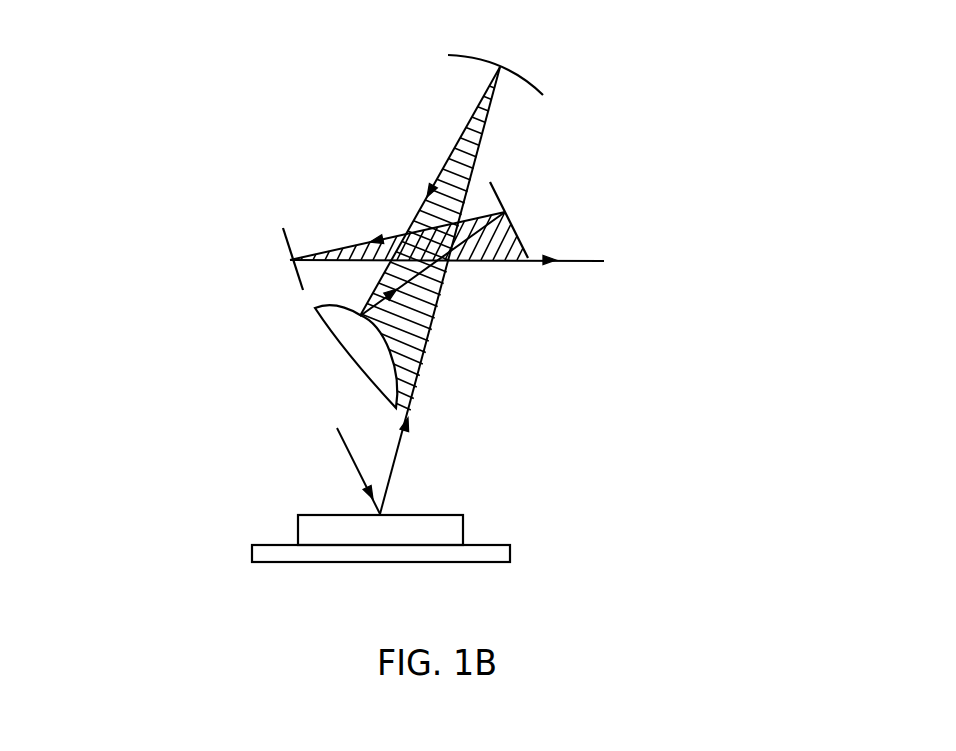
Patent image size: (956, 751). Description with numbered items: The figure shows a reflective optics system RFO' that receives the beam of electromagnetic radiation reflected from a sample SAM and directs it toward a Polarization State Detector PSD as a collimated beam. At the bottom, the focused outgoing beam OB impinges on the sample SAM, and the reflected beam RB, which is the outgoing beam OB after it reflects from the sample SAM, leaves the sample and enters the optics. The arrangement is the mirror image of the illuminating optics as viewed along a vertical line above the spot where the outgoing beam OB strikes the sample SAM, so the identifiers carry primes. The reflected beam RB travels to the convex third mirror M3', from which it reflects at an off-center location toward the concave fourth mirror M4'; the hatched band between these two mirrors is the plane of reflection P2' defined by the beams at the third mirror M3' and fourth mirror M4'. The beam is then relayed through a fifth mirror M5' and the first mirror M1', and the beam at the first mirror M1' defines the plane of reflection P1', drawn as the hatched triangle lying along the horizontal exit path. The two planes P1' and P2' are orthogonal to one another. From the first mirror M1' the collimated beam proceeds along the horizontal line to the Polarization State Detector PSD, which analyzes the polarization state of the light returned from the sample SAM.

The reflective optics system RFO' is at (523, 212).
The first mirror M1' is at (252, 263).
The third mirror M3' is at (215, 349).
The fourth mirror M4' is at (520, 57).
The fifth mirror M5' is at (545, 215).
The first plane of incidence P1' is at (323, 229).
The second plane of incidence P2' is at (521, 283).
The outgoing beam OB is at (339, 450).
The reflected beam RB is at (403, 461).
The polarization state detector PSD is at (576, 254).
The sample SAM is at (410, 542).